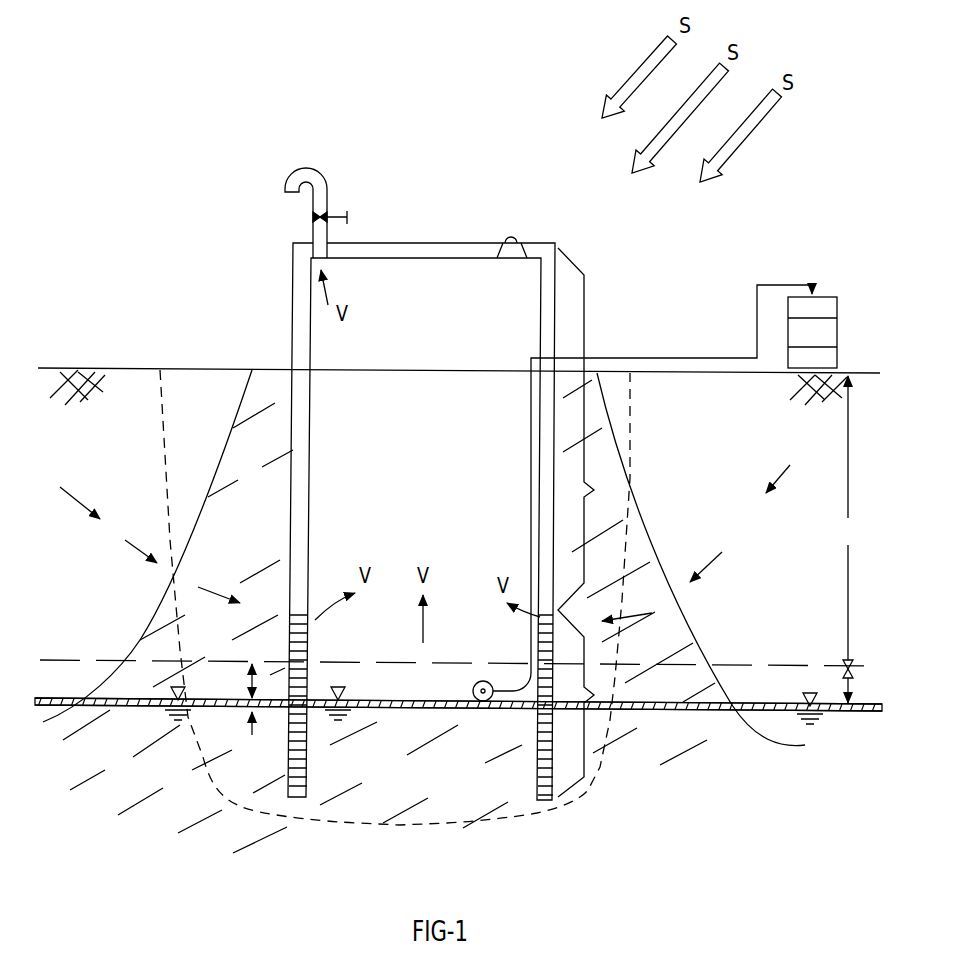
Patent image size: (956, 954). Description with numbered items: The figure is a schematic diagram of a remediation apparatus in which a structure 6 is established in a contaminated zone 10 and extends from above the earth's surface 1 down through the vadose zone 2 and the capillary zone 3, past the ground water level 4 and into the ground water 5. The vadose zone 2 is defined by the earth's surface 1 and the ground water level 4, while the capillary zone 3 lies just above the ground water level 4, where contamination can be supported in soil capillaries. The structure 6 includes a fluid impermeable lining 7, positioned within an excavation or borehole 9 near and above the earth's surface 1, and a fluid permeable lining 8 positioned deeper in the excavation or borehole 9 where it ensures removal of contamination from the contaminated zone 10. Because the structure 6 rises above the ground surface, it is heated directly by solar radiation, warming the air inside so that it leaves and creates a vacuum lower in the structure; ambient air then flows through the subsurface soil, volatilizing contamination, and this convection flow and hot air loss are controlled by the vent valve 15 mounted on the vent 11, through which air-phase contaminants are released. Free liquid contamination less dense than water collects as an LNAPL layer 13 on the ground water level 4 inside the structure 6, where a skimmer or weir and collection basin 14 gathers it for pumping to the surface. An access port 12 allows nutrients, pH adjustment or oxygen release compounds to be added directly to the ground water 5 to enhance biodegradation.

The earth's surface 1 is at (77, 362).
The vadose zone 2 is at (848, 518).
The capillary zone 3 is at (856, 682).
The ground water level 4 is at (343, 684).
The ground water 5 is at (602, 817).
The structure 6 is at (297, 300).
The fluid impermeable lining 7 is at (583, 522).
The fluid permeable lining 8 is at (447, 705).
The excavation or borehole 9 is at (632, 407).
The contaminated zone 10 is at (250, 535).
The vent 11 is at (293, 163).
The access port 12 is at (517, 243).
The LNAPL layer 13 is at (252, 713).
The skimmer or weir and collection basin 14 is at (482, 676).
The vent valve 15 is at (353, 200).